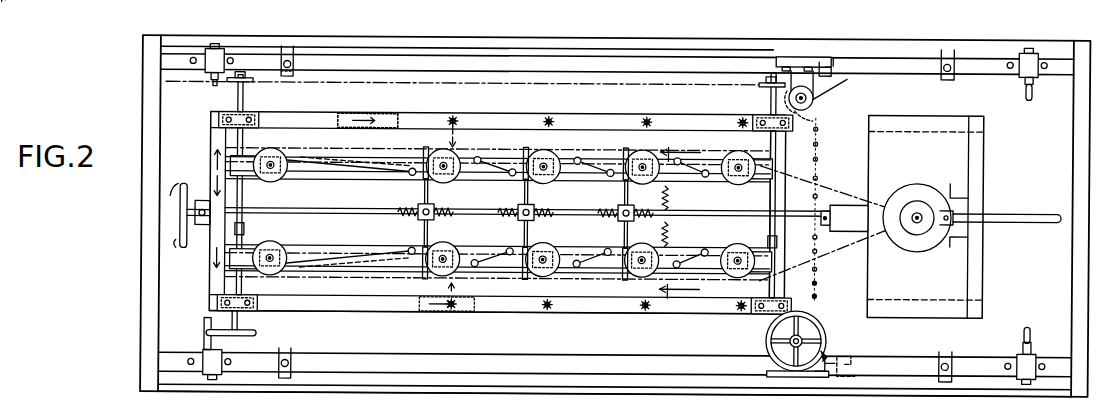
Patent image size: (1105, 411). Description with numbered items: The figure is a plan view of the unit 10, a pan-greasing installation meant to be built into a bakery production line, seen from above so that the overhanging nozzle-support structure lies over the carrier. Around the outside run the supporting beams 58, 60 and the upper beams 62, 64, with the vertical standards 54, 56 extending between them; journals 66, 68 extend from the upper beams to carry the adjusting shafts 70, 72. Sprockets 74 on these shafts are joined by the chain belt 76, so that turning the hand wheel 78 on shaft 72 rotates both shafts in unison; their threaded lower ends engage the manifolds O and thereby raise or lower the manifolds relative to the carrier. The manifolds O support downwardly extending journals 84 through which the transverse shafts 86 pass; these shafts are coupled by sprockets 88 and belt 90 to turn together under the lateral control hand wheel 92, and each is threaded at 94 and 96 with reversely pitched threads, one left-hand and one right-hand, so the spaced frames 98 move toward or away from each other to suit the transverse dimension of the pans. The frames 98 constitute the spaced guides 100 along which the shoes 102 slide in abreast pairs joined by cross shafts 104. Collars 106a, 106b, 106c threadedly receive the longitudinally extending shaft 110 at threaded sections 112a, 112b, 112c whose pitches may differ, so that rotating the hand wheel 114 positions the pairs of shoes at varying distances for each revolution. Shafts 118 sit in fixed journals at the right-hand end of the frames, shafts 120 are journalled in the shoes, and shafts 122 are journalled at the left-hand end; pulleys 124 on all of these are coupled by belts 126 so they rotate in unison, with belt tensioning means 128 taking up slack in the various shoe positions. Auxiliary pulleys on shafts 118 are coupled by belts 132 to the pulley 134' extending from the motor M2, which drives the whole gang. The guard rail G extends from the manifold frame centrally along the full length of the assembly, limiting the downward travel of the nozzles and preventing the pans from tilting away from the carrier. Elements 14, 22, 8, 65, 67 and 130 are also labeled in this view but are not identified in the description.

The unit 10 is at (128, 252).
The handle 14 is at (204, 201).
The hand wheel 114 is at (178, 240).
The indicator markers 22 is at (374, 161).
The direction arrows 8 is at (679, 221).
The vertical standard 54 is at (844, 63).
The vertical standard 56 is at (848, 371).
The supporting beam 58 is at (922, 68).
The supporting beam 60 is at (582, 364).
The upper beam 62 is at (543, 48).
The upper beam 64 is at (567, 387).
The hanger bracket 65 is at (790, 61).
The journal 66 is at (850, 84).
The handwheel base 67 is at (774, 379).
The journal 68 is at (832, 355).
The adjusting shaft 70 is at (812, 102).
The adjusting shaft 72 is at (768, 346).
The sprocket 74 is at (812, 122).
The chain belt 76 is at (820, 160).
The hand wheel 78 is at (826, 337).
The journal 84 is at (232, 112).
The transverse shaft 86 is at (243, 94).
The sprocket 88 is at (242, 80).
The belt 90 is at (496, 84).
The lateral control hand wheel 92 is at (236, 338).
The thread 94 is at (240, 181).
The thread 96 is at (786, 242).
The frame 98 is at (244, 164).
The guide 100 is at (378, 158).
The shoe 102 is at (424, 154).
The cross shaft 104 is at (424, 186).
The collar 106a is at (416, 208).
The collar 106b is at (516, 210).
The collar 106c is at (616, 210).
The longitudinally extending shaft 110 is at (322, 182).
The threaded section 112a is at (404, 220).
The threaded section 112b is at (516, 220).
The threaded section 112c is at (612, 220).
The shaft 118 is at (734, 160).
The shaft 120 is at (446, 153).
The shaft 122 is at (271, 155).
The pulley 124 is at (288, 176).
The belt 126 is at (336, 152).
The belt tensioning means 128 is at (475, 158).
The central shaft 130 is at (527, 213).
The belt 132 is at (846, 178).
The pulley 134' is at (925, 244).
The motor M2 is at (920, 188).
The guard rail G is at (1024, 212).
The manifold O is at (376, 114).